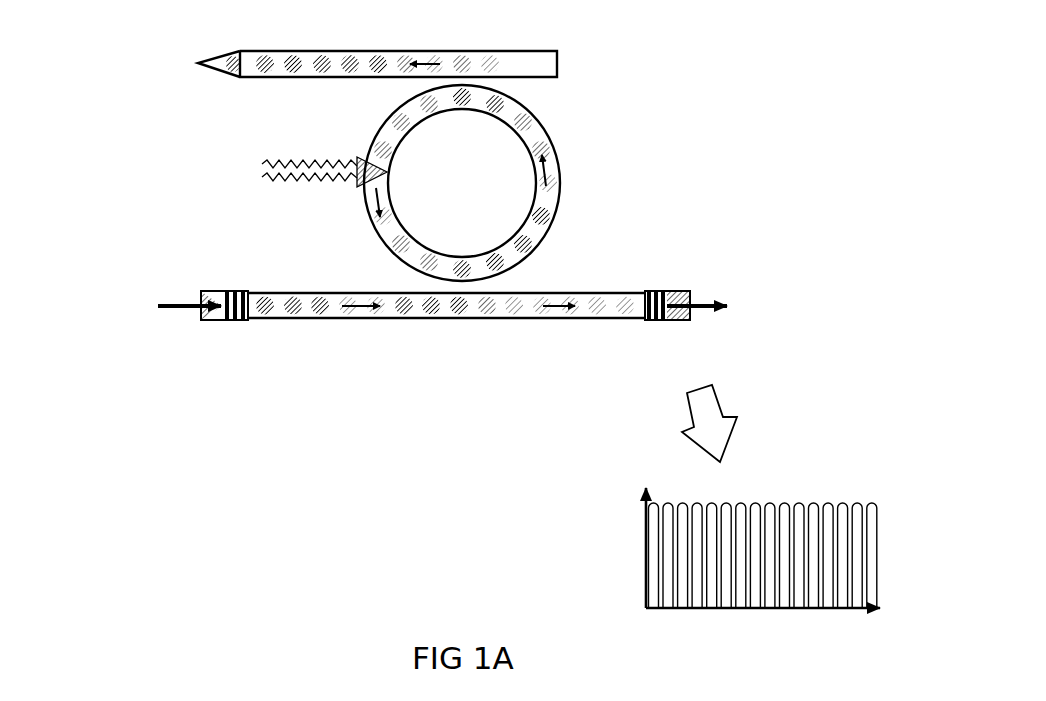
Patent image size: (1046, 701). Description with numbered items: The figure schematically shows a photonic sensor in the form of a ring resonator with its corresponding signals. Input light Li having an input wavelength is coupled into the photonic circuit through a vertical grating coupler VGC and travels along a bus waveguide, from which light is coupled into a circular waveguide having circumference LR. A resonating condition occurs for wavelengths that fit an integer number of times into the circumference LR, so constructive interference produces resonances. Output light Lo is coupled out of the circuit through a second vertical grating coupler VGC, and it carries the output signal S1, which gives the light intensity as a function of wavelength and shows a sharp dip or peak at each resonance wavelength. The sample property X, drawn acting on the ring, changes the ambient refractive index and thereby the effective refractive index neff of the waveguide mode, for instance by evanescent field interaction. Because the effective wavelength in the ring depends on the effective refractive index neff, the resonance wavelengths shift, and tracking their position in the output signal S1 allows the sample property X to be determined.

The circumference of the circular waveguide LR is at (462, 183).
The effective refractive index neff is at (378, 147).
The sample property X is at (253, 184).
The vertical grating coupler VGC is at (444, 323).
The input light Li is at (156, 309).
The output light Lo is at (739, 309).
The output signal S1 is at (769, 504).